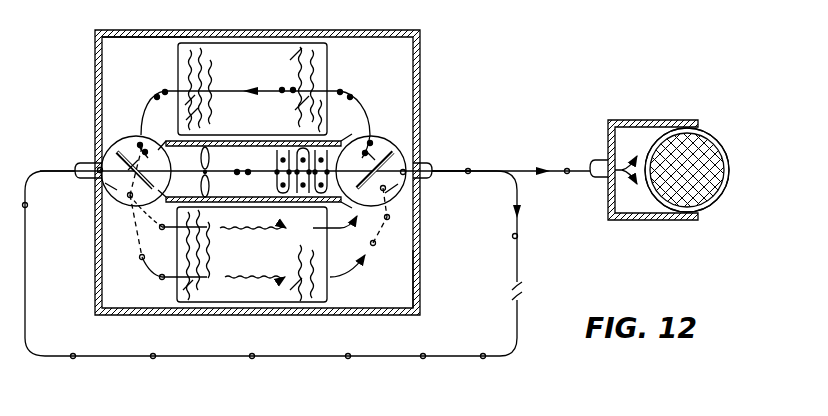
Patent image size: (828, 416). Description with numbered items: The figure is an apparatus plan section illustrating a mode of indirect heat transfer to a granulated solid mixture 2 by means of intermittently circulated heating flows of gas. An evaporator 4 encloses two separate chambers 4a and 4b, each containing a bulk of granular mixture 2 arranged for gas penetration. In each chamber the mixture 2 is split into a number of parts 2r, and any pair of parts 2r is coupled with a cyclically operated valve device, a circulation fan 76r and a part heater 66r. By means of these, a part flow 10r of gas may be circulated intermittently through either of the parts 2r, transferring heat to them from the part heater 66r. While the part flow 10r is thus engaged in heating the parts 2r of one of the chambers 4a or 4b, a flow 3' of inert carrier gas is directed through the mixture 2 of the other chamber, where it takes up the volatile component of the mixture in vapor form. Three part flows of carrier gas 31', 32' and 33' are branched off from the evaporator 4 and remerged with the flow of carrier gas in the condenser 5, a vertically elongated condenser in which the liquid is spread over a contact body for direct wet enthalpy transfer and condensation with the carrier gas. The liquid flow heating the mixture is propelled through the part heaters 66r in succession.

The evaporator 4 is at (420, 76).
The chamber 4a is at (157, 48).
The chamber 4b is at (397, 268).
The mixture 2 is at (252, 175).
The part of the mixture 2r is at (272, 67).
The part flow of gas 10r is at (328, 90).
The part heater 66r is at (355, 111).
The circulation fan 76r is at (212, 152).
The flow of inert carrier gas 3' is at (273, 278).
The part flow of carrier gas 31' is at (511, 132).
The part flow of carrier gas 32' is at (511, 132).
The part flow of carrier gas 33' is at (511, 132).
The condenser 5 is at (664, 159).